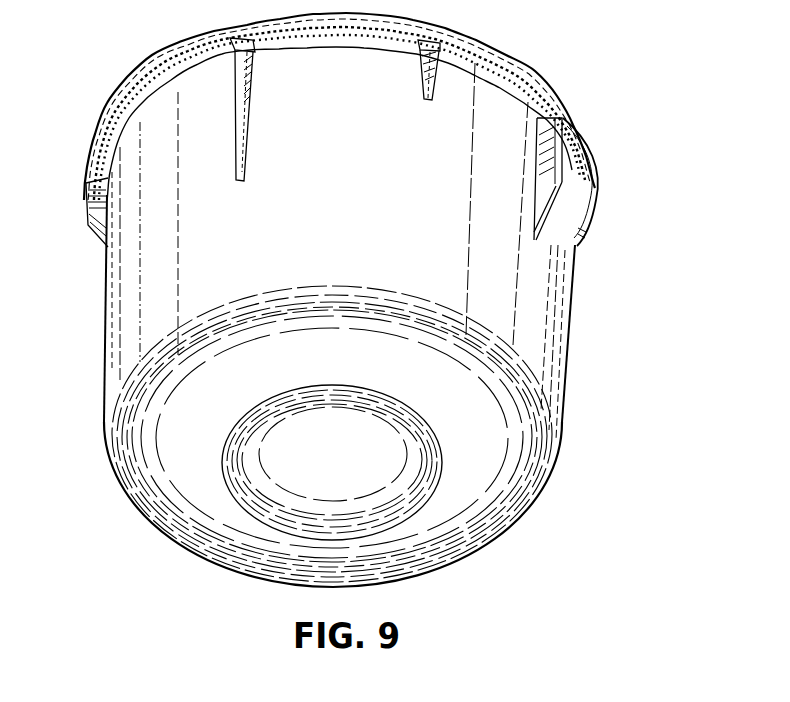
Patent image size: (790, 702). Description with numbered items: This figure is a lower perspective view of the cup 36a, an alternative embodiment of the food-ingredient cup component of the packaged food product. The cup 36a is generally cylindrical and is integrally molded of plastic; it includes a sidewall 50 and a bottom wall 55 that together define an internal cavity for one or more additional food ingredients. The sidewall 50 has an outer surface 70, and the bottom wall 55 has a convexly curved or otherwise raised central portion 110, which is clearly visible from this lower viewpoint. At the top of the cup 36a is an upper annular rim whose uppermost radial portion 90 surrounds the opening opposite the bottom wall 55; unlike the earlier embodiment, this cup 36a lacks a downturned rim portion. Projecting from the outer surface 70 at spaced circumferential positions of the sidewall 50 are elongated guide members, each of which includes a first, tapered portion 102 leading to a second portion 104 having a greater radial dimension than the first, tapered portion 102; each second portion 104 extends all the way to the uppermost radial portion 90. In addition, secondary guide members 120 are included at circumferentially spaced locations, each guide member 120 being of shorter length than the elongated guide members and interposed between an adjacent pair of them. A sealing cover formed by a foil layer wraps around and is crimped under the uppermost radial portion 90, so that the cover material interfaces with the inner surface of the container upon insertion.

The cup 36a is at (598, 84).
The sidewall 50 is at (157, 283).
The bottom wall 55 is at (465, 525).
The outer surface 70 is at (354, 188).
The uppermost radial portion 90 is at (593, 202).
The first, tapered portion 102 is at (543, 224).
The second portion 104 is at (562, 147).
The raised central portion 110 is at (292, 485).
The secondary guide members 120 is at (423, 75).